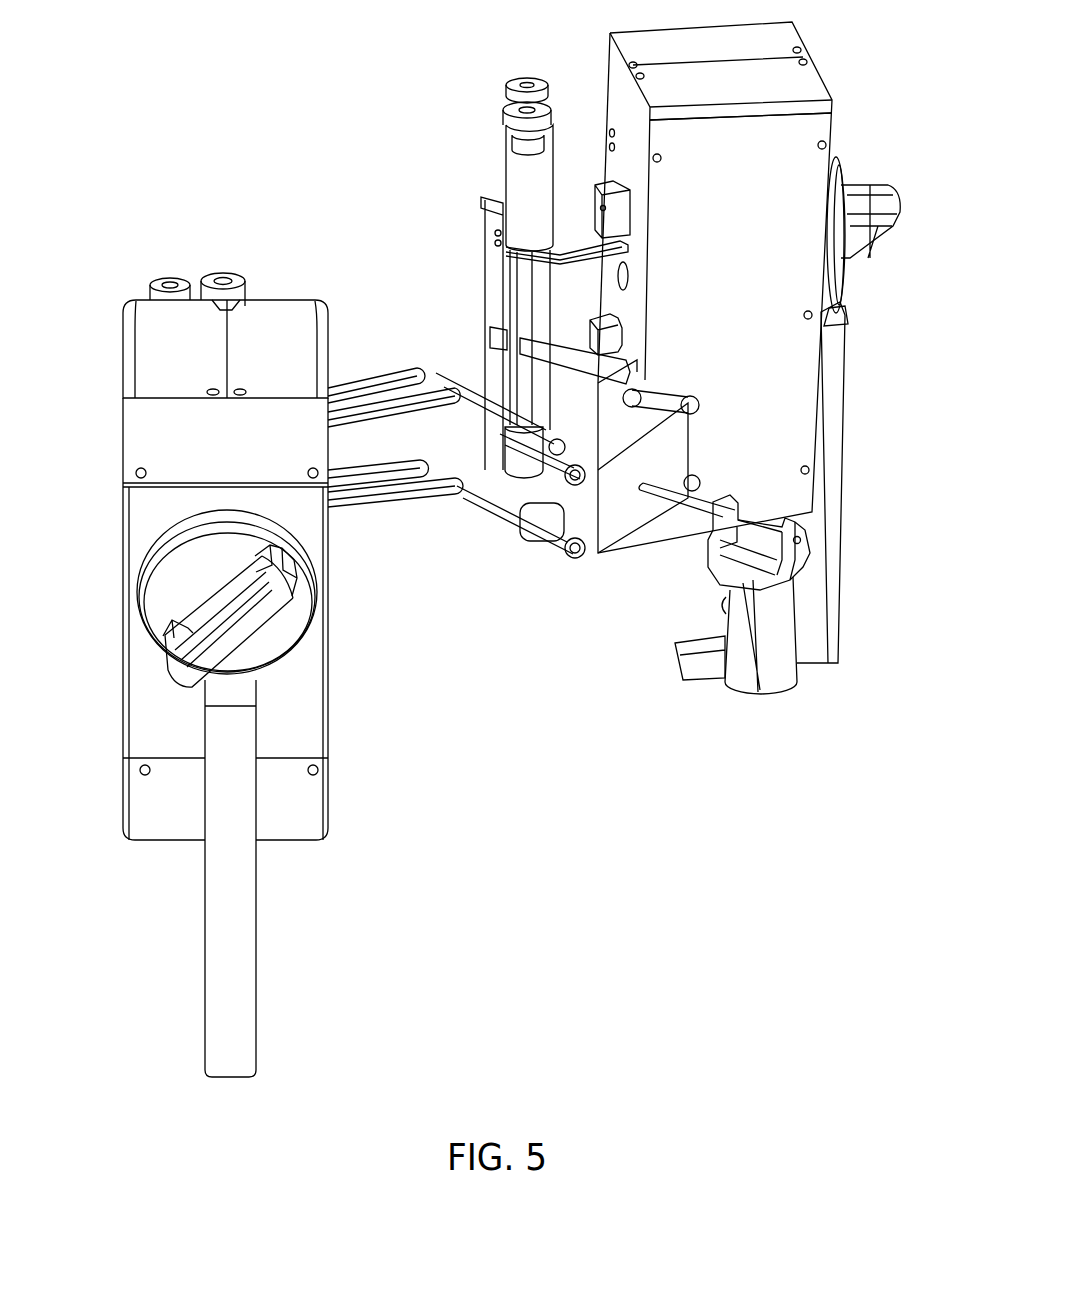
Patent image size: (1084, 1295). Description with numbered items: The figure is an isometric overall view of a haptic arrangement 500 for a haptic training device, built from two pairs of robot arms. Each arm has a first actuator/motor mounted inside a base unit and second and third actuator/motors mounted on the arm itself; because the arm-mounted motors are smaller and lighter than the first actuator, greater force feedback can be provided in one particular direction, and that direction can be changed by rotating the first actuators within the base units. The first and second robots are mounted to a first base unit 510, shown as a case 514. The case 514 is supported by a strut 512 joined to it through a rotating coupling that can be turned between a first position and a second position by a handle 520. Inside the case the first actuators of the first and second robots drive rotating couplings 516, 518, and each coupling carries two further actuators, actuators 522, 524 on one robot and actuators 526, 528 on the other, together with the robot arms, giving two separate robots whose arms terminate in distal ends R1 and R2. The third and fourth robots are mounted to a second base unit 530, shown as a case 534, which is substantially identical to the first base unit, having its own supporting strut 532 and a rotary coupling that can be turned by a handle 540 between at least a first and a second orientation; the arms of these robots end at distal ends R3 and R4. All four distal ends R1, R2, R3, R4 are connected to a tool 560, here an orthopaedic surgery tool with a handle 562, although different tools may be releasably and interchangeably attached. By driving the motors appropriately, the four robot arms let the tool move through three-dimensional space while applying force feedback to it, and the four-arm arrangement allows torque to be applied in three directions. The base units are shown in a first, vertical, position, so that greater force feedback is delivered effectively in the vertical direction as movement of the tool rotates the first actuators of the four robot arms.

The haptic arrangement 500 is at (136, 106).
The first base unit 510 is at (840, 80).
The strut 512 is at (830, 590).
The case 514 is at (836, 125).
The rotating coupling 516 is at (632, 200).
The rotating coupling 518 is at (630, 320).
The handle 520 is at (898, 228).
The actuator 522 is at (508, 82).
The actuator 524 is at (508, 118).
The actuator 526 is at (520, 480).
The actuator 528 is at (483, 432).
The second base unit 530 is at (104, 282).
The supporting strut 532 is at (207, 926).
The case 534 is at (124, 364).
The handle 540 is at (140, 604).
The tool 560 is at (660, 596).
The handle 562 is at (764, 698).
The distal end R1 is at (690, 396).
The distal end R2 is at (696, 482).
The distal end R3 is at (598, 450).
The distal end R4 is at (577, 557).